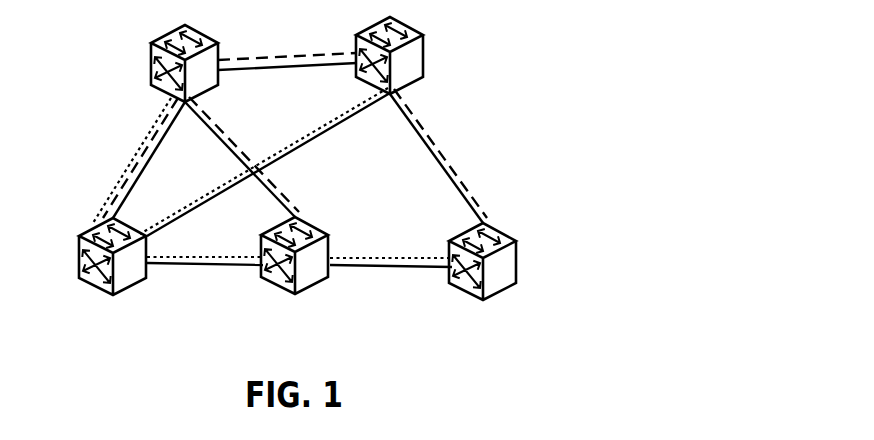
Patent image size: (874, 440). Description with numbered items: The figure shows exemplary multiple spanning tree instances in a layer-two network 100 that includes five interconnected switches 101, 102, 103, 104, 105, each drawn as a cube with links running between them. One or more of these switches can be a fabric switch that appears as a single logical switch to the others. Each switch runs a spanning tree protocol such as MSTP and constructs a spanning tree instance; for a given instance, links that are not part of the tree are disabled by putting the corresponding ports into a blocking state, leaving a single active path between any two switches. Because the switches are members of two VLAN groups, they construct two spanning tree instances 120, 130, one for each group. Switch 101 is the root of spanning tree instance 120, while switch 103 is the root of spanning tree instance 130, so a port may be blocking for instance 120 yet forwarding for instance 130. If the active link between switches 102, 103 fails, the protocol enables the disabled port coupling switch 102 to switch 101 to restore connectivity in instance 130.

The layer-2 network 100 is at (625, 297).
The switch 101 is at (155, 88).
The switch 102 is at (361, 77).
The switch 103 is at (85, 278).
The switch 104 is at (266, 274).
The switch 105 is at (455, 282).
The spanning tree instance 120 is at (428, 136).
The spanning tree instance 130 is at (130, 165).